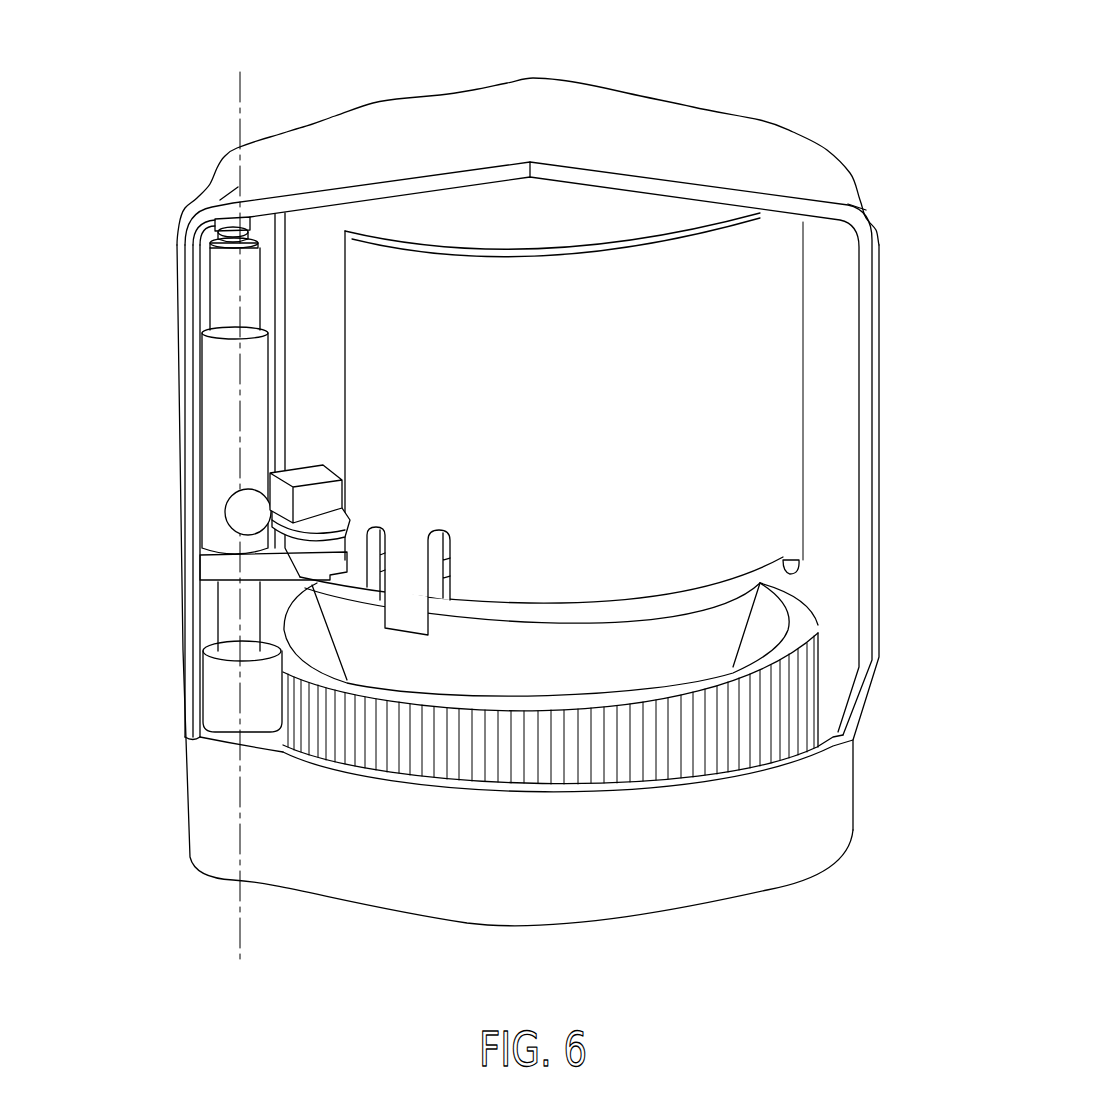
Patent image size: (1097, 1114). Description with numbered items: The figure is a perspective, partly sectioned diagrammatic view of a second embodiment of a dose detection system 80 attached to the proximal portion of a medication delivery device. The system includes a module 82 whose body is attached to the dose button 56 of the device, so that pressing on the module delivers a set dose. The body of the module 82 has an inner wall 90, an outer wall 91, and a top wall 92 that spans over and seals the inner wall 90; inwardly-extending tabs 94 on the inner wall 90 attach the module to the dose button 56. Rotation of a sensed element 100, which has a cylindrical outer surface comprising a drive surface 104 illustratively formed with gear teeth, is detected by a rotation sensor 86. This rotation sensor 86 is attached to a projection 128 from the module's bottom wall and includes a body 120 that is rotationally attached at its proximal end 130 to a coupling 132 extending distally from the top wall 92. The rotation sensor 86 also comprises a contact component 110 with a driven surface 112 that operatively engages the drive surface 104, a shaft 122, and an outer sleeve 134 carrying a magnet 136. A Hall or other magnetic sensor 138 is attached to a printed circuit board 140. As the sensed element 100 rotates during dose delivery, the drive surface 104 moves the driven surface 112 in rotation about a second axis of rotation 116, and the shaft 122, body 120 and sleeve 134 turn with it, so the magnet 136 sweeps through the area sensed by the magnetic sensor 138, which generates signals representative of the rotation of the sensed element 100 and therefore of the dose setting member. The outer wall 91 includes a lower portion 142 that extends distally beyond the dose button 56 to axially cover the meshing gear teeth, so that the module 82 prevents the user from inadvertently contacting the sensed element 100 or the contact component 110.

The dose button 56 is at (737, 615).
The dose detection system 80 is at (830, 96).
The module 82 is at (150, 147).
The rotation sensor 86 is at (165, 585).
The inner wall 90 is at (782, 310).
The outer wall 91 is at (865, 342).
The top wall 92 is at (467, 127).
The inwardly-extending tabs 94 is at (800, 568).
The sensed element 100 is at (708, 745).
The drive surface 104 is at (413, 760).
The contact component 110 is at (225, 710).
The driven surface 112 is at (208, 700).
The second axis of rotation 116 is at (241, 75).
The body 120 is at (212, 288).
The shaft 122 is at (230, 628).
The projection 128 is at (263, 572).
The proximal end 130 is at (228, 228).
The coupling 132 is at (203, 230).
The outer sleeve 134 is at (210, 370).
The magnet 136 is at (228, 513).
The magnetic sensor 138 is at (282, 472).
The printed circuit board 140 is at (330, 527).
The lower portion 142 is at (837, 802).